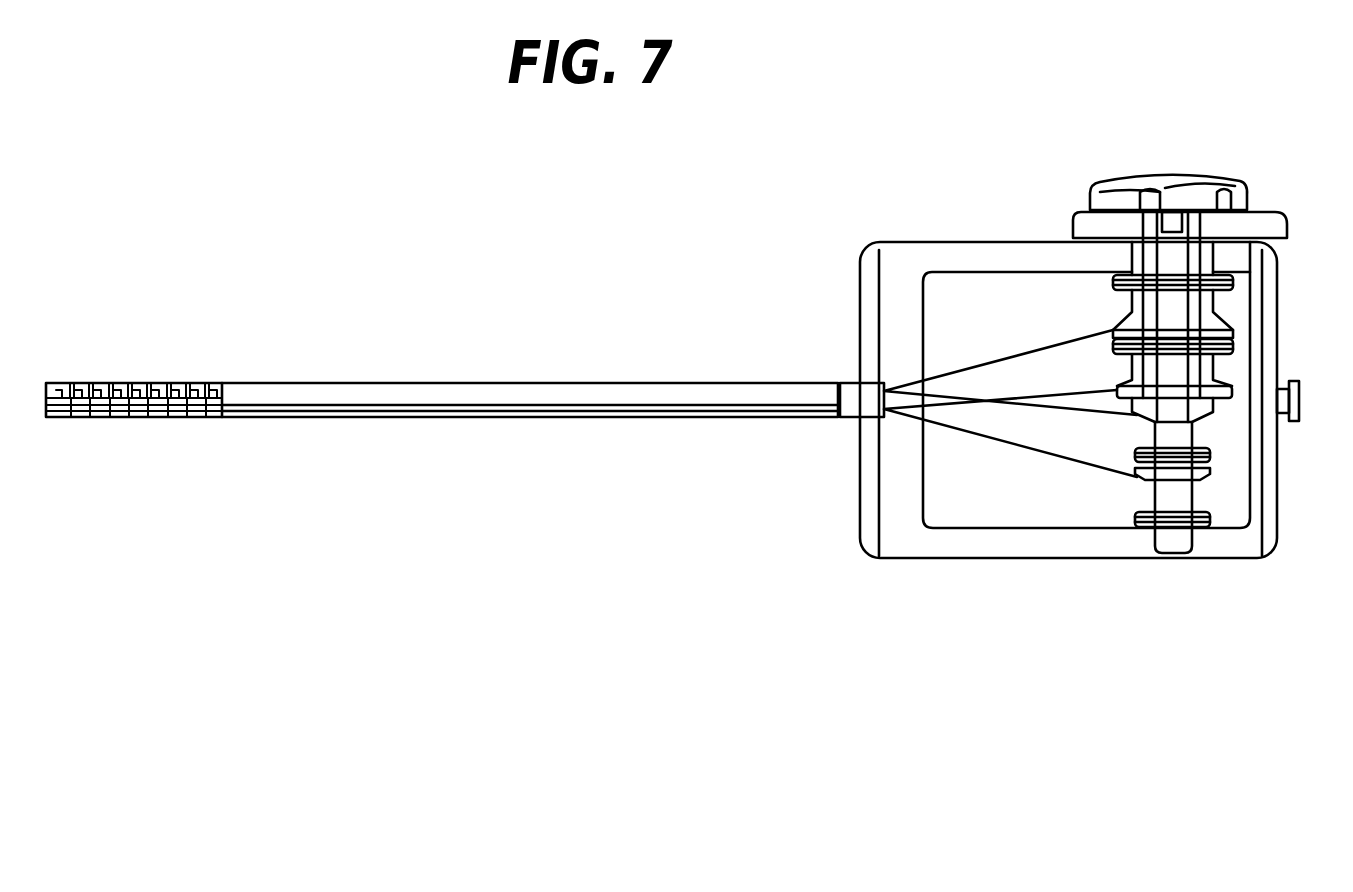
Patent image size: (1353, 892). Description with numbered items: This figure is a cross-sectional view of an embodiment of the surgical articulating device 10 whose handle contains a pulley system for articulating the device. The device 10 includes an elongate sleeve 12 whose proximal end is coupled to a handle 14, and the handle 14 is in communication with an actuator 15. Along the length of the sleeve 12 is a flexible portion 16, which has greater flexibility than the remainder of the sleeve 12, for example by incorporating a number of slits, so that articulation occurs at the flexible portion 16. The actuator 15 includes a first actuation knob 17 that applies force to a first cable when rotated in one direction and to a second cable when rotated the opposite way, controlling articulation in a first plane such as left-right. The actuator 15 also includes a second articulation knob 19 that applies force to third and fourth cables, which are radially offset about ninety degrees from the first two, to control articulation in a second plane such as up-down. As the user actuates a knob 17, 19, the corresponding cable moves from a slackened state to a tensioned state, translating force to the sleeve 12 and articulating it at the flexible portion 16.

The articulating device 10 is at (1258, 664).
The elongate sleeve 12 is at (498, 417).
The handle 14 is at (1006, 593).
The actuator 15 is at (1116, 162).
The flexible portion 16 is at (55, 437).
The first actuation knob 17 is at (1097, 197).
The second articulation knob 19 is at (1087, 227).